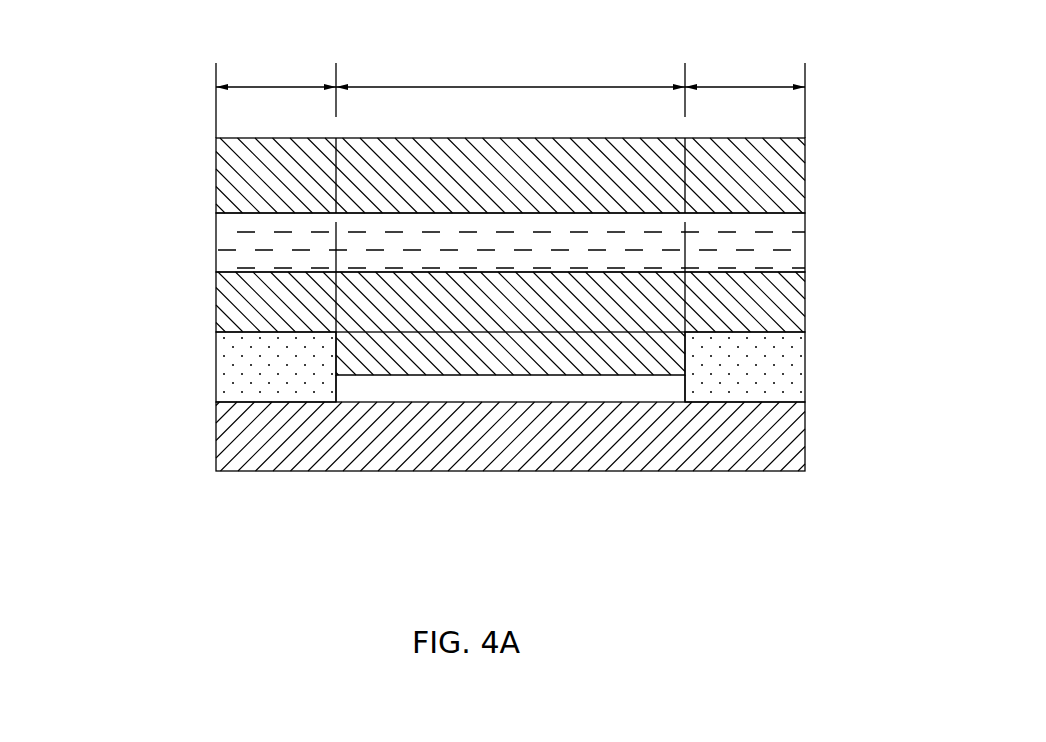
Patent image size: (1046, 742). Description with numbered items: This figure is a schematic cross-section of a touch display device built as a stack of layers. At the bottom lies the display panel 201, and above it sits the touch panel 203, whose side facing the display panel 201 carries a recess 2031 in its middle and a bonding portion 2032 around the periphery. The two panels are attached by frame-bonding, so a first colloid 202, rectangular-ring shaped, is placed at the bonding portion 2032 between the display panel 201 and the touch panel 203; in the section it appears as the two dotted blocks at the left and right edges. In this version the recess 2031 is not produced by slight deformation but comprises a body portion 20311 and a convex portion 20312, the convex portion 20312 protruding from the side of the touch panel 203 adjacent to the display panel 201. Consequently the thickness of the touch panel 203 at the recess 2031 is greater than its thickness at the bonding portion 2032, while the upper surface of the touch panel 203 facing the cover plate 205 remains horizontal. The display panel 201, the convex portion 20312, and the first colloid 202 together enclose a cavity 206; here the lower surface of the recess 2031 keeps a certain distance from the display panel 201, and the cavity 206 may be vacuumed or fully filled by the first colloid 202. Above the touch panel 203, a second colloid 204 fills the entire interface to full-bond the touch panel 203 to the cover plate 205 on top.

The display panel 201 is at (805, 437).
The first colloid 202 is at (775, 388).
The touch panel 203 is at (775, 312).
The recess 2031 is at (510, 69).
The bonding portion 2032 is at (510, 69).
The body portion 20311 is at (467, 293).
The convex portion 20312 is at (420, 363).
The second colloid 204 is at (775, 252).
The cover plate 205 is at (775, 185).
The cavity 206 is at (578, 390).